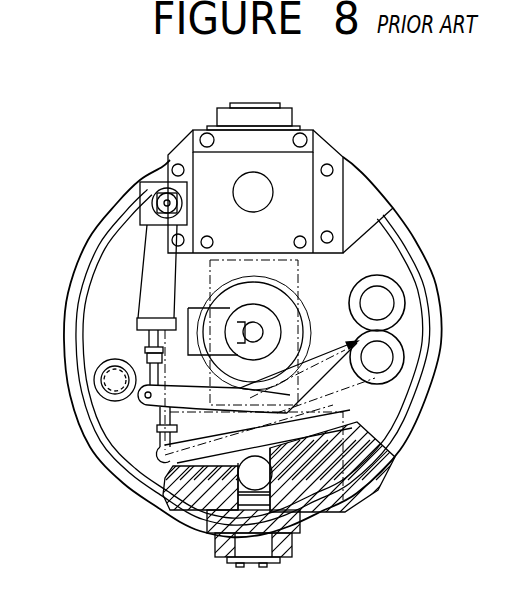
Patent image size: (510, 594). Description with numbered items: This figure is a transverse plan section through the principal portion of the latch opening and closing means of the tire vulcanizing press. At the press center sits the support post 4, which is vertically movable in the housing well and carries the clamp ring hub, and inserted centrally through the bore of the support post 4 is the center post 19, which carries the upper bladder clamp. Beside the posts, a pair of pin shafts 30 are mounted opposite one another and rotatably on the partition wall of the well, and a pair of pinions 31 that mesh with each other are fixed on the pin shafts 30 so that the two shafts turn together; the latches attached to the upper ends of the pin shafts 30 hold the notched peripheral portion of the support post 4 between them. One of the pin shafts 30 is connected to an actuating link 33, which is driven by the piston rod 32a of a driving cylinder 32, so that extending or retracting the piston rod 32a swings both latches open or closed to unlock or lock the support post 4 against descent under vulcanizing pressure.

The support post 4 is at (285, 305).
The center post 19 is at (257, 308).
The pin shafts 30 is at (380, 306).
The pinions 31 is at (405, 296).
The driving cylinder 32 is at (155, 262).
The piston rod 32a is at (160, 352).
The actuating link 33 is at (372, 378).